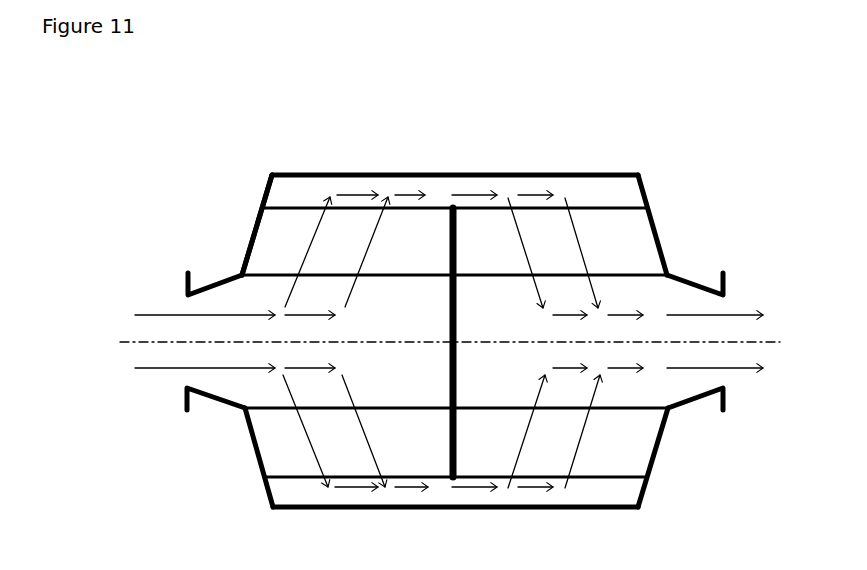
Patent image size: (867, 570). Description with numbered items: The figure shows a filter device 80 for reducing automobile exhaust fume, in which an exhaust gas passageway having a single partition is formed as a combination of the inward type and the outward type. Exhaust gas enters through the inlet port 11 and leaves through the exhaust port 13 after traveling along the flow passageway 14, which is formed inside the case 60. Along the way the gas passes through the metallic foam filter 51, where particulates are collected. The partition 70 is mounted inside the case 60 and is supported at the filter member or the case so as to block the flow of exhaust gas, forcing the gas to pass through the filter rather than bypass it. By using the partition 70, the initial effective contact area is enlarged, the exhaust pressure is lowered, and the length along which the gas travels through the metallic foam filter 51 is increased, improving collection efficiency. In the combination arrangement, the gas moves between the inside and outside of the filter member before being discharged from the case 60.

The inlet port 11 is at (197, 342).
The exhaust port 13 is at (713, 343).
The flow passageway 14 is at (647, 307).
The metallic foam filter 51 is at (273, 237).
The case 60 is at (470, 176).
The partition 70 is at (458, 428).
The filter device 80 is at (380, 166).